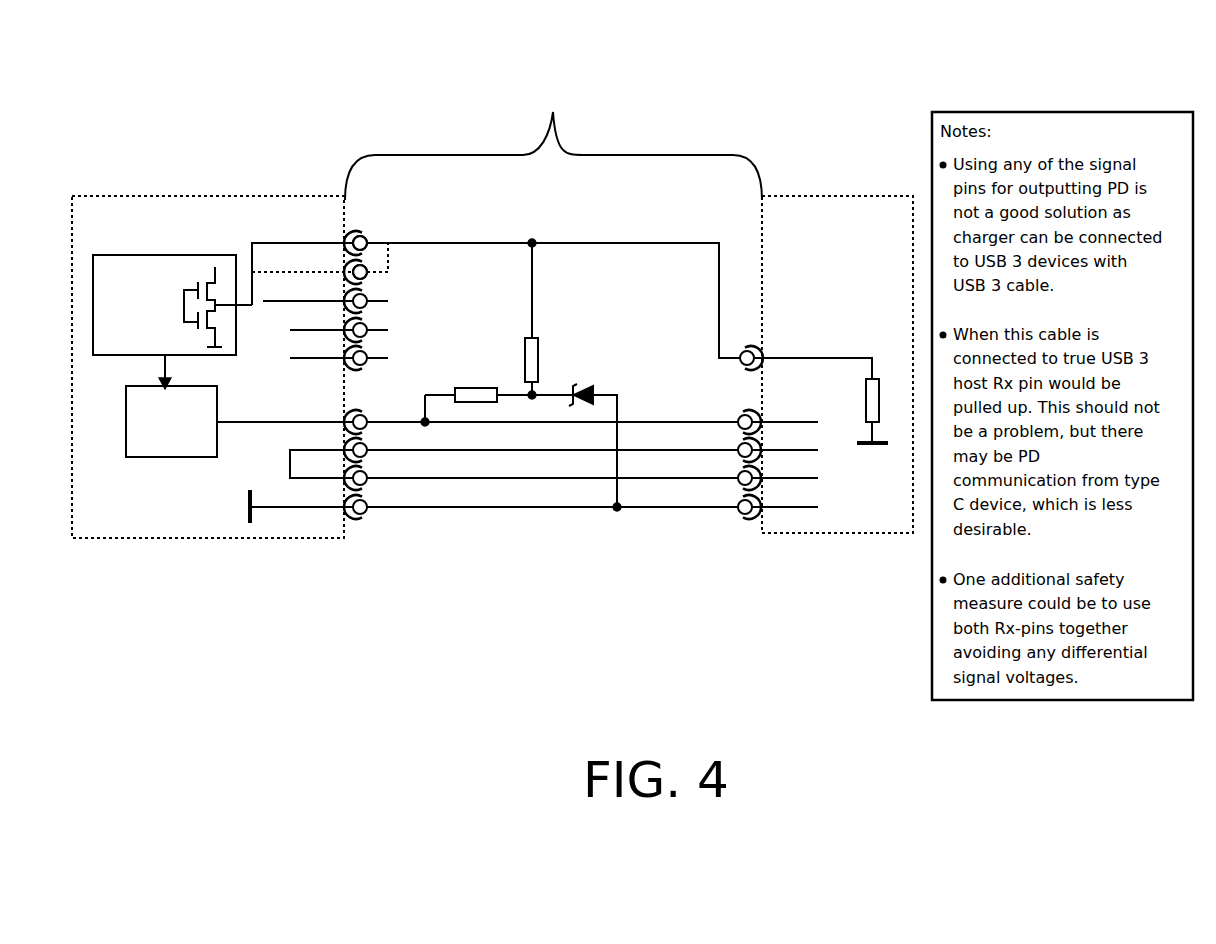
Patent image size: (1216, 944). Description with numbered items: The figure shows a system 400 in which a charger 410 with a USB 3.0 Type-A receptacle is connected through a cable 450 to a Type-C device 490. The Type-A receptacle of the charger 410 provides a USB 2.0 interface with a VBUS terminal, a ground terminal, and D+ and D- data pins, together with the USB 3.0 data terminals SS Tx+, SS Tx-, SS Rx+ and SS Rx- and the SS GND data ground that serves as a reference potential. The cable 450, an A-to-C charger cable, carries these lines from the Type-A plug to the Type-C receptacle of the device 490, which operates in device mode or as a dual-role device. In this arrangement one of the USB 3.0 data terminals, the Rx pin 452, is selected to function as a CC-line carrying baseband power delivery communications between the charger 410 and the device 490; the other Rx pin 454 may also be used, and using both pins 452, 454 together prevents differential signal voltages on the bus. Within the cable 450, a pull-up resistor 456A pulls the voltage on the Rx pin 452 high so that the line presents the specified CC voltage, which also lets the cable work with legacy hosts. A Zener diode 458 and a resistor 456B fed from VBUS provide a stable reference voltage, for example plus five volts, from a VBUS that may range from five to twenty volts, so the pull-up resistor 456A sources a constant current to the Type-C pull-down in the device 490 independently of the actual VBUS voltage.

The system 400 is at (656, 56).
The charger 410 is at (224, 224).
The cable 450 is at (553, 336).
The Rx pin 452 is at (369, 241).
The Rx pin 454 is at (370, 274).
The pull-up resistor 456A is at (524, 356).
The resistor 456B is at (472, 390).
The Zener diode 458 is at (583, 394).
The Type-C device 490 is at (851, 304).